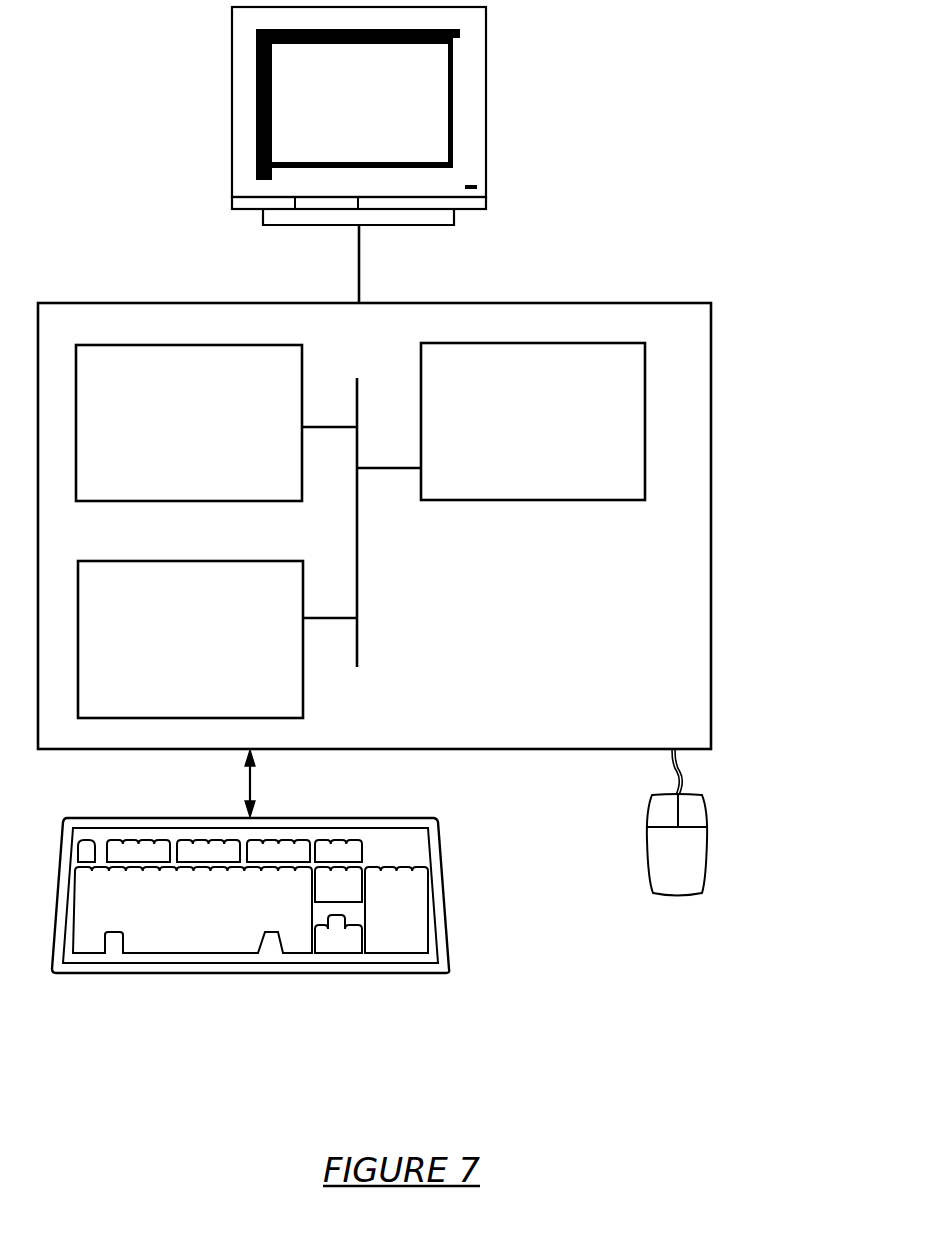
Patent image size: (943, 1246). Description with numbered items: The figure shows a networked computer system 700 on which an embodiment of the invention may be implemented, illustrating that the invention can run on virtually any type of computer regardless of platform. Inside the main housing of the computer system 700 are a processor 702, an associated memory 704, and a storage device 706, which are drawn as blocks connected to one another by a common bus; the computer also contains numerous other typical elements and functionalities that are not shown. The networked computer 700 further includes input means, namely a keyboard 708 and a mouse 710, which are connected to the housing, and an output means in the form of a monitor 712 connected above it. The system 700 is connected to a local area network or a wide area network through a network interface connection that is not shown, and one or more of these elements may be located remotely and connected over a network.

The networked computer system 700 is at (724, 160).
The processor 702 is at (528, 436).
The memory 704 is at (168, 436).
The storage device 706 is at (166, 652).
The keyboard 708 is at (162, 936).
The mouse 710 is at (656, 869).
The monitor 712 is at (336, 121).